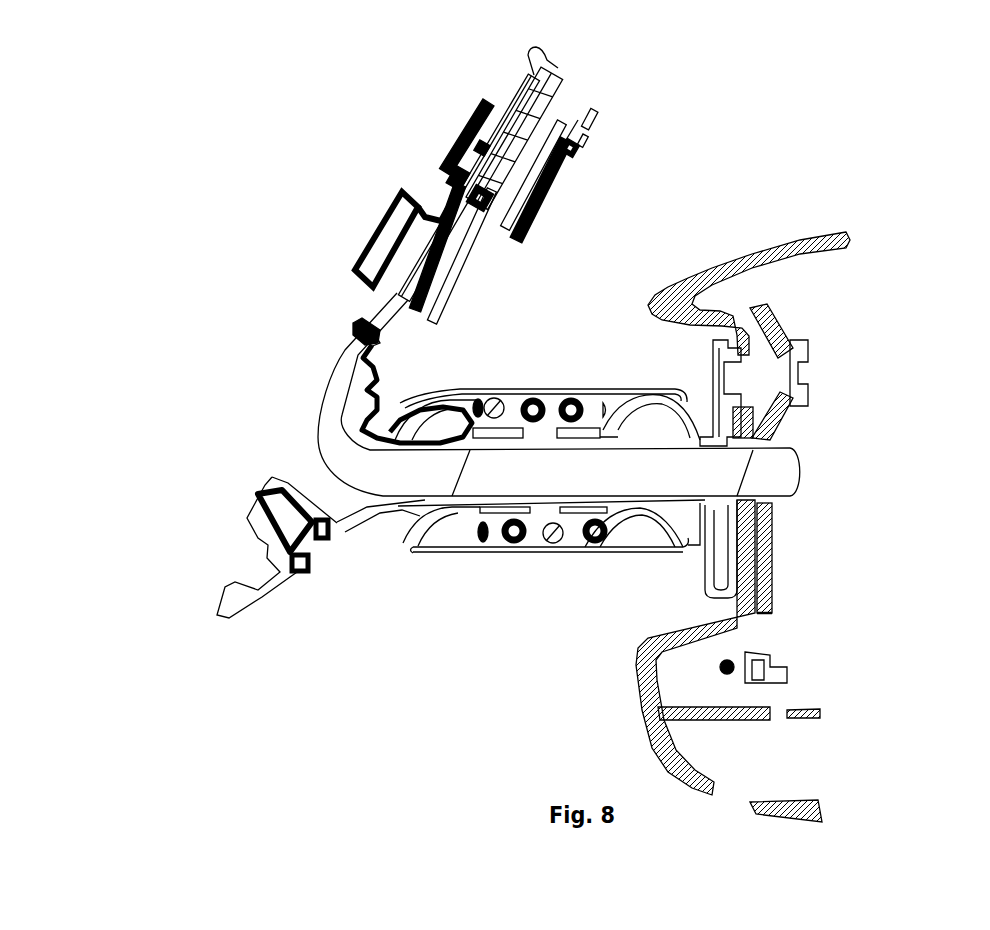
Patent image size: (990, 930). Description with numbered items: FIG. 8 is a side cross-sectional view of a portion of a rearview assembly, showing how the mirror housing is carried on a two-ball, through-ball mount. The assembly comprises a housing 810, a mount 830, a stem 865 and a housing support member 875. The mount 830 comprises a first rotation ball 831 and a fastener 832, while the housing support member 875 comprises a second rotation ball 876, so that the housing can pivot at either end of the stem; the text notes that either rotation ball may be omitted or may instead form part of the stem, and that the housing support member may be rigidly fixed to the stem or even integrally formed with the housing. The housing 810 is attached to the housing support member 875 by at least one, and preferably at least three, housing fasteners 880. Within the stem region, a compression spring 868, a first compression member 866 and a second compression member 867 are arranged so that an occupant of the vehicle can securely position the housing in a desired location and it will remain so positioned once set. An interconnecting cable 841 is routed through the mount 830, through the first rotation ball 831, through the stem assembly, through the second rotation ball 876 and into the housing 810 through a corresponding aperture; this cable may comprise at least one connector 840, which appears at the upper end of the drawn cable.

The housing 810 is at (770, 242).
The mount 830 is at (262, 585).
The first rotation ball 831 is at (382, 523).
The fastener 832 is at (272, 510).
The connector 840 is at (560, 73).
The interconnecting cable 841 is at (370, 325).
The stem 865 is at (510, 548).
The first compression member 866 is at (438, 542).
The second compression member 867 is at (635, 550).
The compression spring 868 is at (568, 396).
The housing support member 875 is at (717, 347).
The second rotation ball 876 is at (667, 420).
The housing fasteners 880 is at (778, 378).